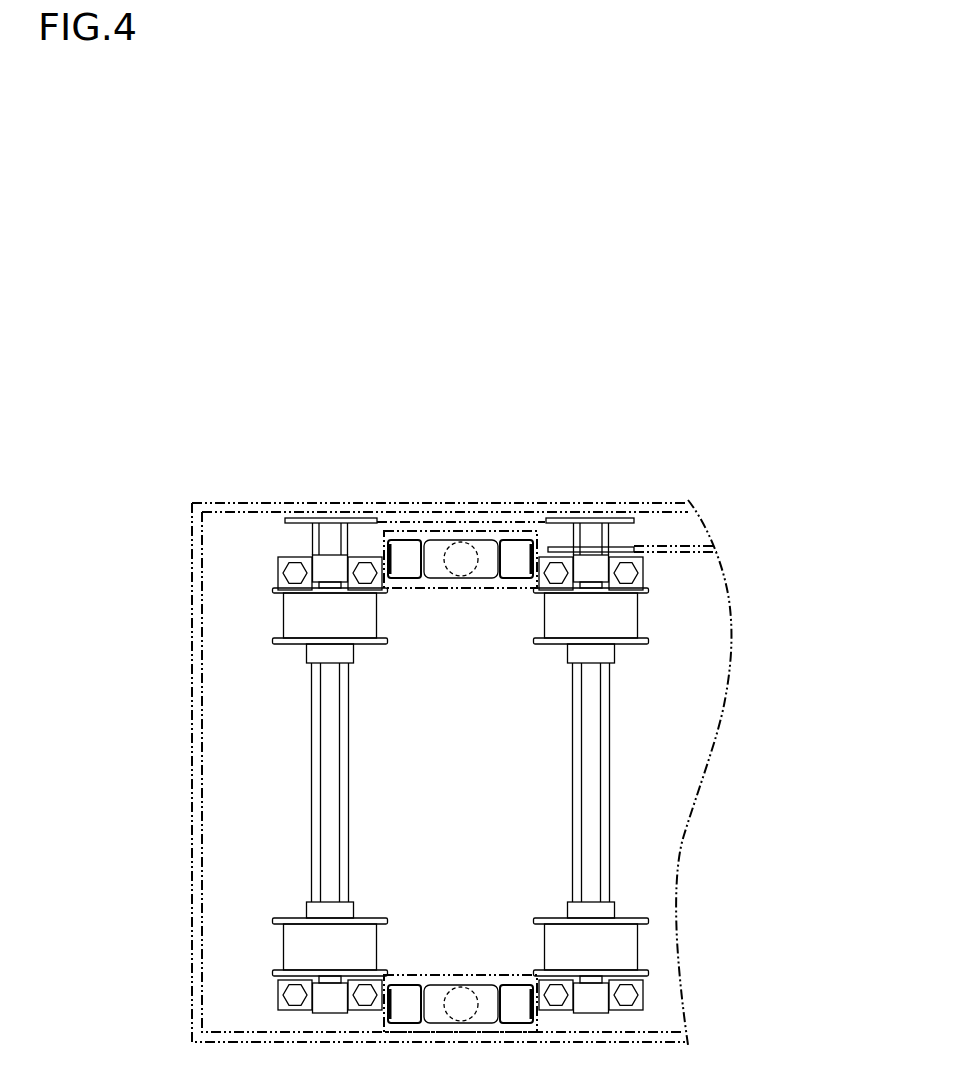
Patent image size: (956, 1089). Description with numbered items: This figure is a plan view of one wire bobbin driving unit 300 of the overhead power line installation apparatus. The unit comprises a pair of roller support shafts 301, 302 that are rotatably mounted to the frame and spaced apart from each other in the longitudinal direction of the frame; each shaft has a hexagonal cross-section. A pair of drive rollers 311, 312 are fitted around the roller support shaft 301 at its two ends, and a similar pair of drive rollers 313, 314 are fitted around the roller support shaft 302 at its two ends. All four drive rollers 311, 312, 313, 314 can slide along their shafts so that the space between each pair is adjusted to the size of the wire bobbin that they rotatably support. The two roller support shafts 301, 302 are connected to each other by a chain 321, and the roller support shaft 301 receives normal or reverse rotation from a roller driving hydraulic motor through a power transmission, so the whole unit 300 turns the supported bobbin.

The wire bobbin driving unit 300 is at (147, 483).
The roller support shaft 301 is at (318, 777).
The roller support shaft 302 is at (608, 778).
The drive roller 311 is at (292, 620).
The drive roller 312 is at (293, 950).
The drive roller 313 is at (632, 612).
The drive roller 314 is at (630, 948).
The chain 321 is at (442, 522).